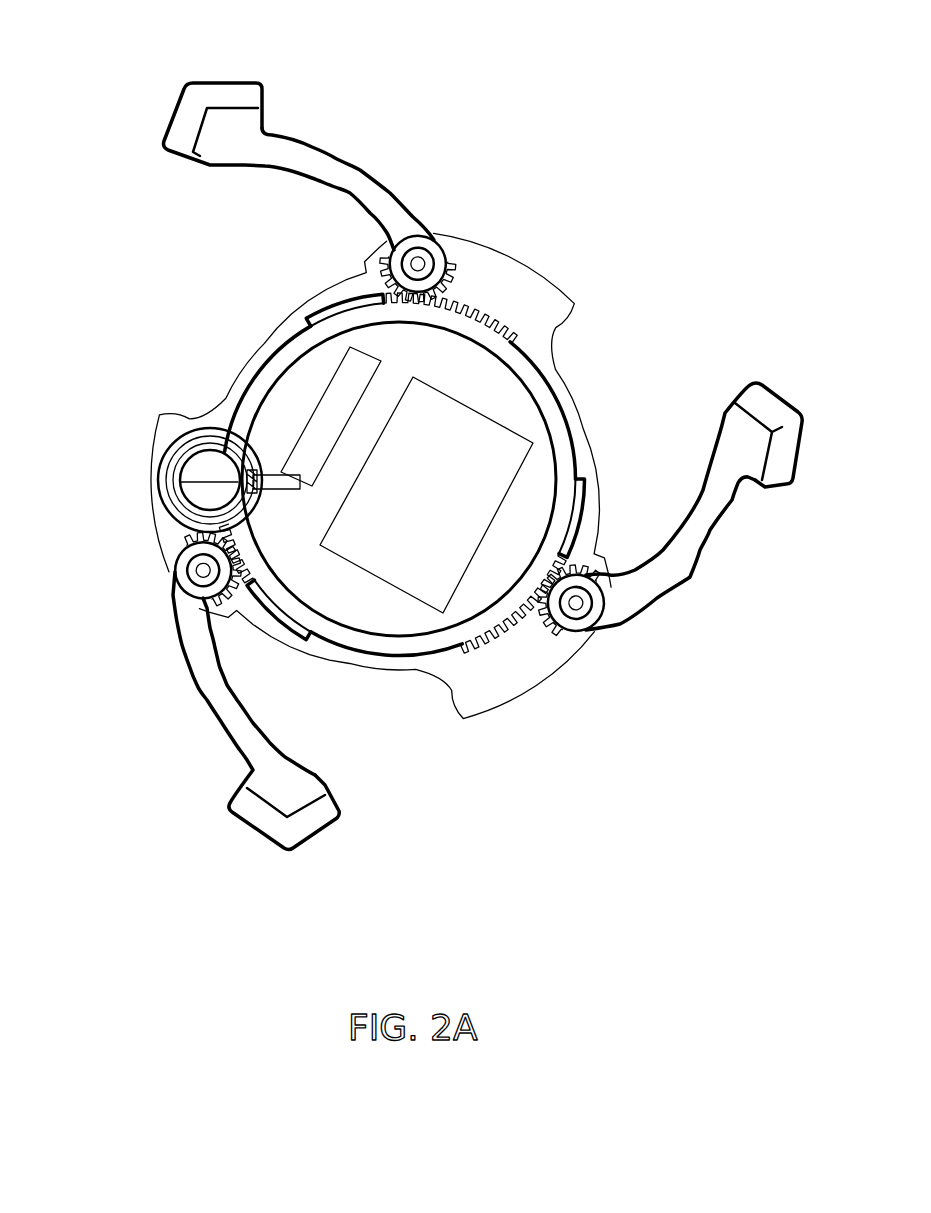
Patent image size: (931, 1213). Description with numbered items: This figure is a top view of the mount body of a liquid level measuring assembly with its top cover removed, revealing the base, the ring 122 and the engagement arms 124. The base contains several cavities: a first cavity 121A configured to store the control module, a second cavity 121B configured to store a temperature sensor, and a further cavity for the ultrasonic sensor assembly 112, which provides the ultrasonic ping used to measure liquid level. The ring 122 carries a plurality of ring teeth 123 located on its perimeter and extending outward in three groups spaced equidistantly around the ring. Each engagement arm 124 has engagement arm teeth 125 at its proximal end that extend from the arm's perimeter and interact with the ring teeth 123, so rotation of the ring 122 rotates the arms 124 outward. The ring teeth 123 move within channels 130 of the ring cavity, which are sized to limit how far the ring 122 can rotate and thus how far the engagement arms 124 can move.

The ultrasonic sensor assembly 112 is at (198, 469).
The first cavity 121A is at (423, 537).
The second cavity 121B is at (333, 417).
The ring 122 is at (533, 383).
The ring teeth 123 is at (345, 305).
The engagement arms 124 is at (312, 160).
The engagement arm teeth 125 is at (380, 262).
The channels 130 is at (352, 306).